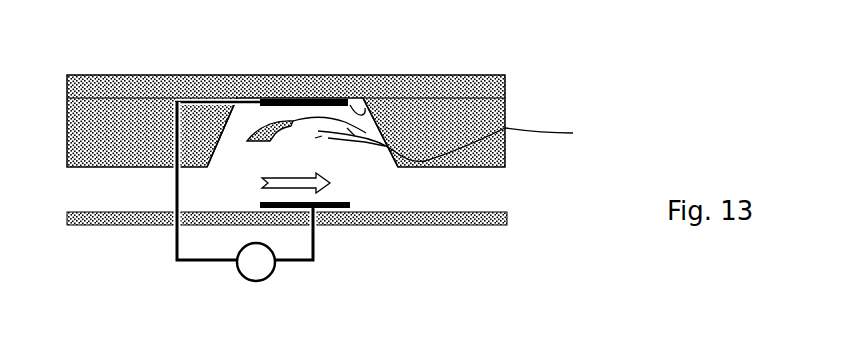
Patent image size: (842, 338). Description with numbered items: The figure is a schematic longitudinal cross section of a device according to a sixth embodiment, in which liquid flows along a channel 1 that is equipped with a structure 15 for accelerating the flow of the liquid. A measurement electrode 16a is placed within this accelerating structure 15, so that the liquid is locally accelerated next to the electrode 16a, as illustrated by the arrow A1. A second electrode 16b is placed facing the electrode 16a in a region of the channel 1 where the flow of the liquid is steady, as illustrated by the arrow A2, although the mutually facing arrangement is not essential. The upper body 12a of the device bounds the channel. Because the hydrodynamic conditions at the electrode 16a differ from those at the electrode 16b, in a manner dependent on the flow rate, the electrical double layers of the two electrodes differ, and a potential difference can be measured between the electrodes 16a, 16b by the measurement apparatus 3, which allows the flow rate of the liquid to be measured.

The channel 1 is at (74, 178).
The upper substrate body 12a is at (812, 0).
The structure for accelerating the flow 15 is at (381, 134).
The measurement electrode 16a is at (365, 108).
The electrode 16b is at (347, 196).
The measurement apparatus 3 is at (263, 283).
The arrow illustrating accelerated flow A1 is at (425, 139).
The arrow illustrating steady flow A2 is at (321, 182).